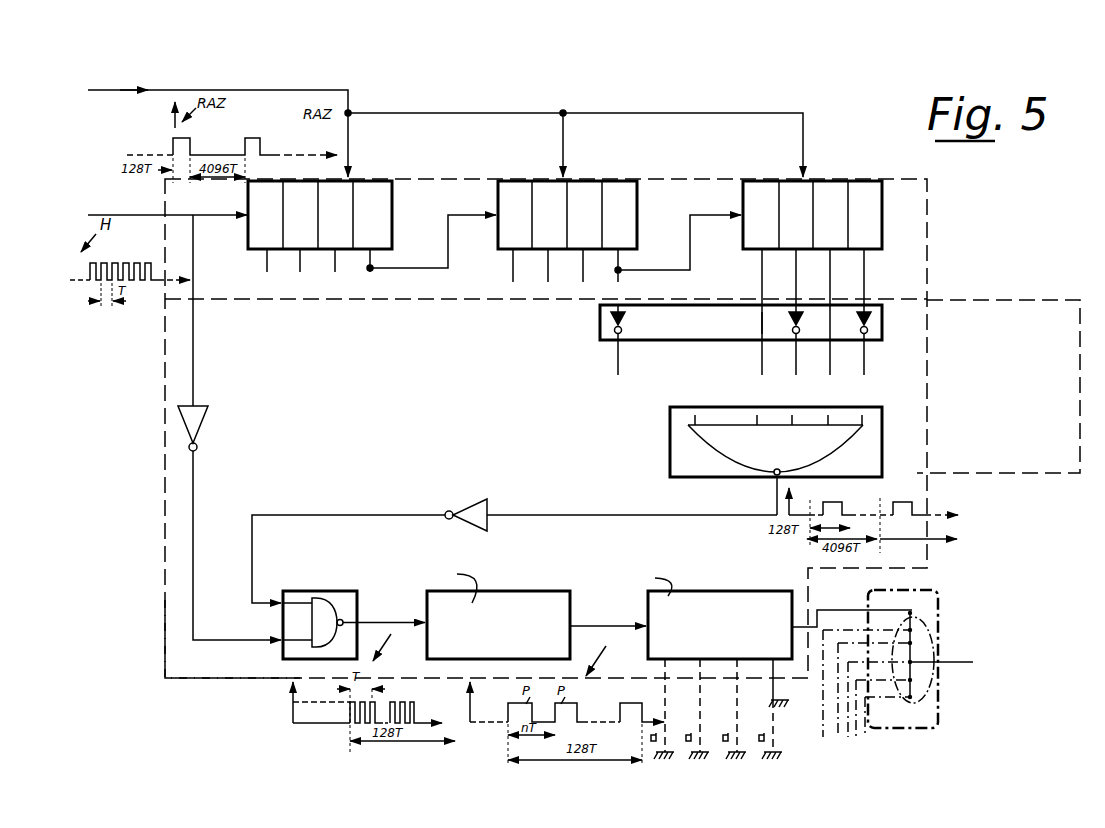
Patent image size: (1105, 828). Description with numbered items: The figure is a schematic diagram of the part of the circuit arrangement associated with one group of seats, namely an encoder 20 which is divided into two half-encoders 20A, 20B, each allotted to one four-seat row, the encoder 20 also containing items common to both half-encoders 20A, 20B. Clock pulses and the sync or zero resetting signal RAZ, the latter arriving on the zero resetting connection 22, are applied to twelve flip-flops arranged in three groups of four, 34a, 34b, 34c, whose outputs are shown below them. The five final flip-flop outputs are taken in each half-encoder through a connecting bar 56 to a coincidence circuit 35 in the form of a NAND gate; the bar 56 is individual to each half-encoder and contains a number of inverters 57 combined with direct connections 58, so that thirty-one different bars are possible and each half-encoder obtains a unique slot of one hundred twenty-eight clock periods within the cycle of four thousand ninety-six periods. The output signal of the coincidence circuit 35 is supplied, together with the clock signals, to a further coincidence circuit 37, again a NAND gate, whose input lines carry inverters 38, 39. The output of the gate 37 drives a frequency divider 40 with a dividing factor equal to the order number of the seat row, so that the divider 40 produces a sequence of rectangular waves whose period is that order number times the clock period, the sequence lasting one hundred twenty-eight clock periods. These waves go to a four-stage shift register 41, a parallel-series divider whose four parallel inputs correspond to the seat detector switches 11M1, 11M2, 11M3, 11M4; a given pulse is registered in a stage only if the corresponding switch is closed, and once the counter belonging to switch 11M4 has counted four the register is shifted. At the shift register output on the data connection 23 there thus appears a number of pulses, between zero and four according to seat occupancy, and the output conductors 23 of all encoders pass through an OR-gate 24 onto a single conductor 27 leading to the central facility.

The zero resetting connection 22 is at (575, 131).
The first group of four flip-flops 34a is at (371, 239).
The second group of four flip-flops 34b is at (609, 239).
The third group of four flip-flops 34c is at (824, 243).
The encoder 20 is at (565, 428).
The half-encoder 20A is at (232, 658).
The half-encoder 20B is at (998, 386).
The connecting bar 56 is at (719, 353).
The inverter 57 is at (636, 340).
The direct connection 58 is at (741, 341).
The coincidence circuit 35 is at (747, 461).
The inverter 38 is at (229, 523).
The inverter 39 is at (514, 534).
The coincidence circuit 37 is at (354, 609).
The frequency divider 40 is at (517, 606).
The shift register 41 is at (679, 604).
The connection for the transmission of data 23 is at (852, 669).
The OR-gate 24 is at (922, 643).
The single conductor 27 is at (948, 645).
The seat micro-contact 11M1 is at (673, 709).
The seat micro-contact 11M2 is at (708, 709).
The seat micro-contact 11M3 is at (745, 709).
The seat micro-contact 11M4 is at (782, 709).